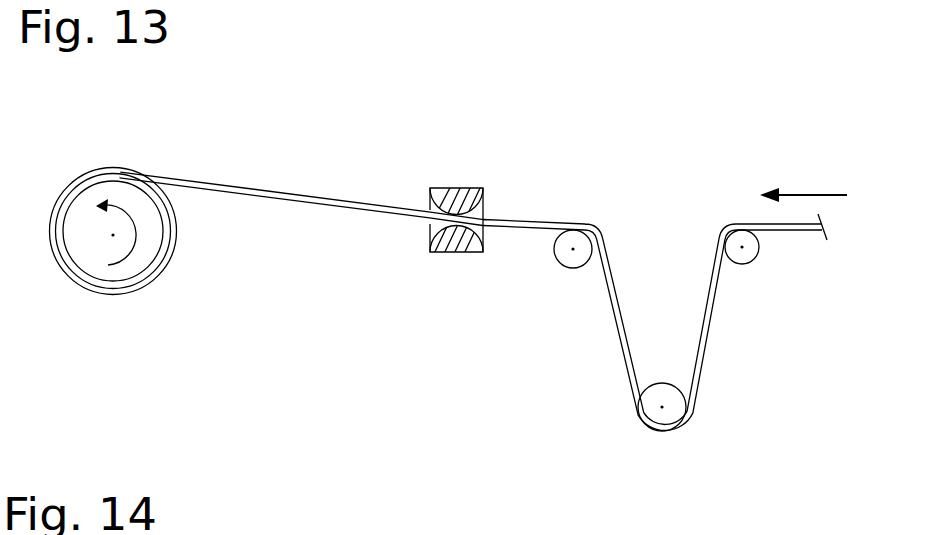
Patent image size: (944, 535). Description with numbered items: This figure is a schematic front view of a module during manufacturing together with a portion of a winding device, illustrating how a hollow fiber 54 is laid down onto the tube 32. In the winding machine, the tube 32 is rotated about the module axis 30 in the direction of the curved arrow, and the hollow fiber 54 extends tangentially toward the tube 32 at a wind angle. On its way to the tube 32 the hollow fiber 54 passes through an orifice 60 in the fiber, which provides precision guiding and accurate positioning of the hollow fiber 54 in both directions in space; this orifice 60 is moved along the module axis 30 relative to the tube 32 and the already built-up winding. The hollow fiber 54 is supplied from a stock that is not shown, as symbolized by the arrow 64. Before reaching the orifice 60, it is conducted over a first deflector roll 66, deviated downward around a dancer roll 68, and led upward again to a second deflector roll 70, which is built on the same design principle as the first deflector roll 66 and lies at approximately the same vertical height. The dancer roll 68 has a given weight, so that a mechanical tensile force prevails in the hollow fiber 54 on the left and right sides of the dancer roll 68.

The module axis 30 is at (113, 235).
The tube 32 is at (148, 268).
The hollow fiber 54 is at (243, 188).
The orifice in the fiber 60 is at (458, 188).
The arrow 64 is at (812, 184).
The first deflector roll 66 is at (745, 260).
The dancer roll 68 is at (663, 423).
The second deflector roll 70 is at (570, 262).